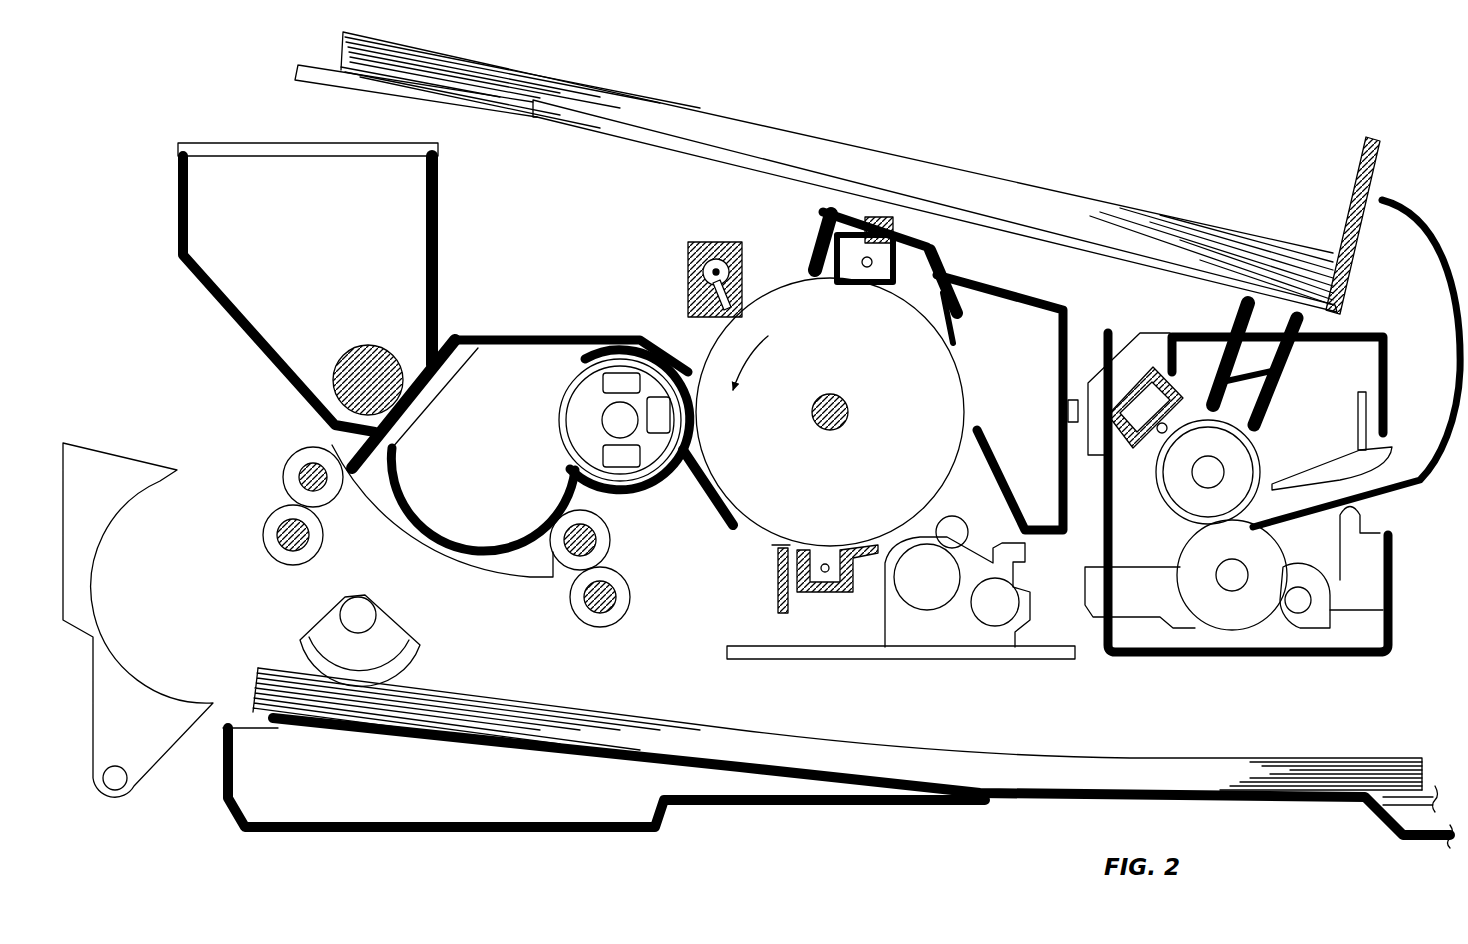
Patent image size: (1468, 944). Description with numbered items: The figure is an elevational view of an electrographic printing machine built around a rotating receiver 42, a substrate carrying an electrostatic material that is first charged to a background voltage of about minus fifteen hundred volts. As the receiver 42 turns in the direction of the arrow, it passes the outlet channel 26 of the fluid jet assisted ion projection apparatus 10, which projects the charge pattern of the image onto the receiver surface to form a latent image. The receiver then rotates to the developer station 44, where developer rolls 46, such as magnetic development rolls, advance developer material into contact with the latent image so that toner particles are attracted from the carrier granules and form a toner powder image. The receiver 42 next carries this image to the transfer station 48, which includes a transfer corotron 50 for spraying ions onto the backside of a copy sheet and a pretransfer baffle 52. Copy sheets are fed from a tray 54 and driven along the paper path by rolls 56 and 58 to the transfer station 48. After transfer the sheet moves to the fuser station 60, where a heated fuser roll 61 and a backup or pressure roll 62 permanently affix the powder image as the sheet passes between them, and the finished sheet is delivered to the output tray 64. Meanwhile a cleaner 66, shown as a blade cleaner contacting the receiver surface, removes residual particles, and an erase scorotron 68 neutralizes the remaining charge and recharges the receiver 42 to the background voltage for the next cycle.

The charging unit 10 is at (685, 243).
The outlet channel 26 is at (745, 306).
The receiver 42 is at (940, 489).
The developer station 44 is at (575, 327).
The developer rolls 46 is at (558, 416).
The transfer station 48 is at (768, 566).
The transfer corotron 50 is at (826, 594).
The pretransfer baffle 52 is at (775, 590).
The tray 54 is at (493, 753).
The rolls 56 is at (286, 464).
The rolls 58 is at (622, 572).
The fuser station 60 is at (1263, 502).
The heated fuser roll 61 is at (1164, 508).
The pressure roll 62 is at (1238, 631).
The output tray 64 is at (1122, 260).
The cleaner 66 is at (1023, 327).
The erase scorotron 68 is at (880, 262).